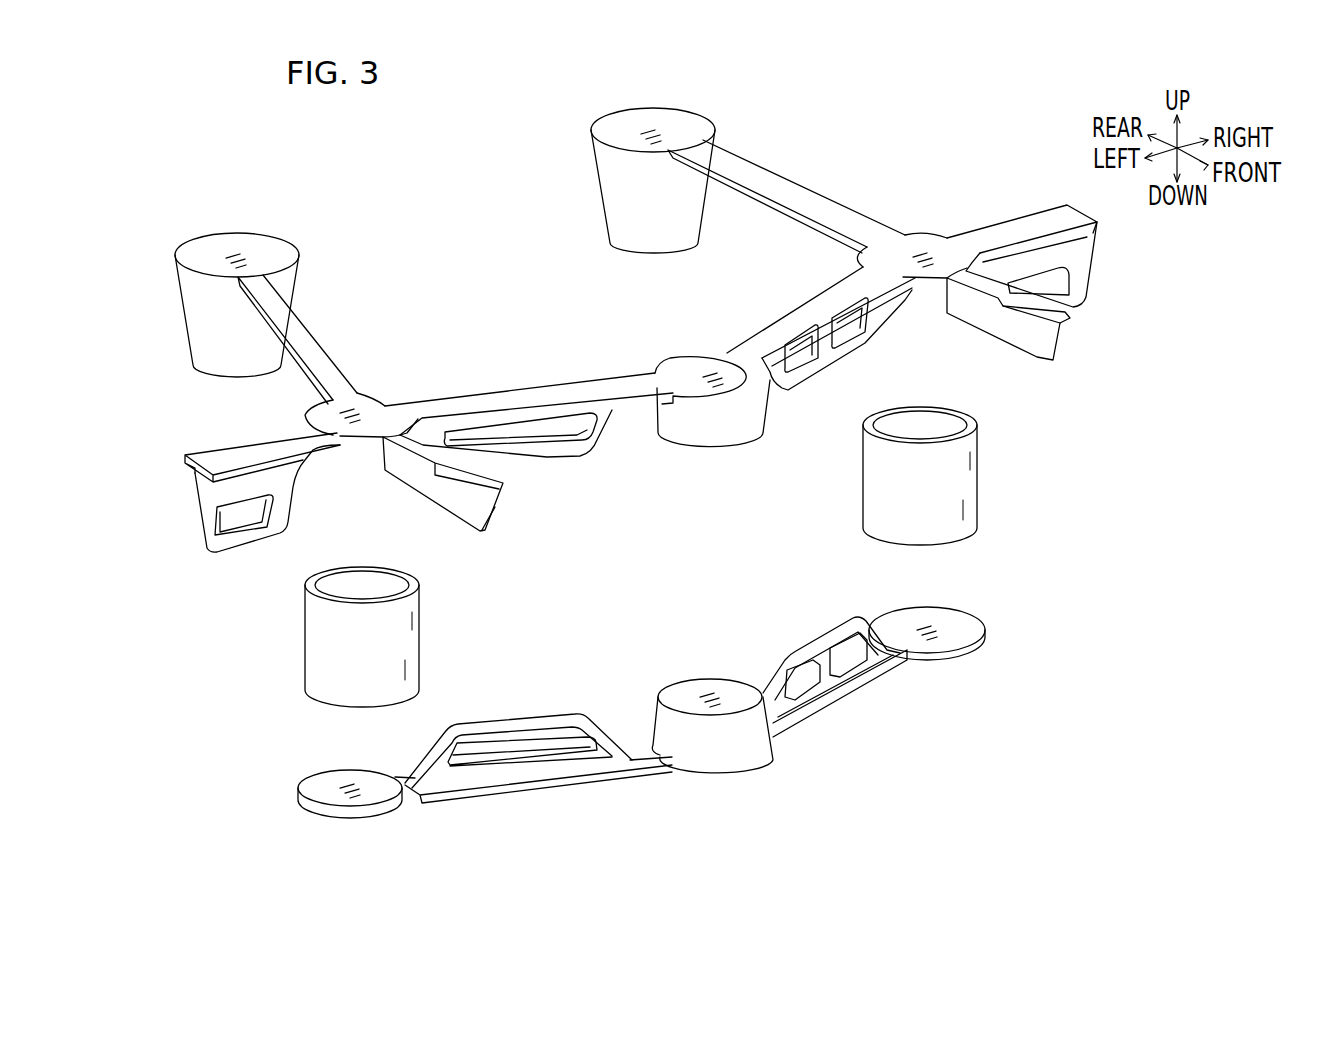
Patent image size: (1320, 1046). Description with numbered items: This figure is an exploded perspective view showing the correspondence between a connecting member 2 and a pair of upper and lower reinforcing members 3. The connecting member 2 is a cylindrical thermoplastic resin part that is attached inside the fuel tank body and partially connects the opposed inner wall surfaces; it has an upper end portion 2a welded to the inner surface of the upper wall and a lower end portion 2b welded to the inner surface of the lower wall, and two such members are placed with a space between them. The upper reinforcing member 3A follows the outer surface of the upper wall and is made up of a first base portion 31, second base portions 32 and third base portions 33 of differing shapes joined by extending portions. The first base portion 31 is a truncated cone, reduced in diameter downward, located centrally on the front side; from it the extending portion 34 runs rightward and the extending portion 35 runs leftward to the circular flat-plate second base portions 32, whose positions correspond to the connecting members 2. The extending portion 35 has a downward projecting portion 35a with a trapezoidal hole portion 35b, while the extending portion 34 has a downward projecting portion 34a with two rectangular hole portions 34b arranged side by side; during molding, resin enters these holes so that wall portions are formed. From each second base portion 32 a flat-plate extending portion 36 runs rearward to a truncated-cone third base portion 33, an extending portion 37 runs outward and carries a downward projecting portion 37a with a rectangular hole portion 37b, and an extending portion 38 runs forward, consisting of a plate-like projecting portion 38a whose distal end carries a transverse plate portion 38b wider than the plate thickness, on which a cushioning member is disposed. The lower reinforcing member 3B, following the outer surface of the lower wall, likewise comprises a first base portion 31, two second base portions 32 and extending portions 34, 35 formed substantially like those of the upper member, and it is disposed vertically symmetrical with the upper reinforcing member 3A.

The connecting member 2 is at (408, 637).
The upper end portion 2a is at (410, 575).
The lower end portion 2b is at (325, 707).
The reinforcing member 3 is at (659, 467).
The upper reinforcing member 3A is at (852, 182).
The lower reinforcing member 3B is at (858, 728).
The first base portion 31 is at (684, 365).
The second base portion 32 is at (378, 404).
The third base portion 33 is at (236, 246).
The extending portion 34 is at (800, 320).
The projecting portion 34a is at (878, 330).
The hole portion 34b is at (845, 372).
The extending portion 35 is at (525, 395).
The projecting portion 35a is at (605, 425).
The hole portion 35b is at (560, 432).
The extending portion 36 is at (318, 332).
The extending portion 37 is at (205, 450).
The projecting portion 37a is at (206, 547).
The hole portion 37b is at (243, 520).
The extending portion 38 is at (505, 512).
The projecting portion 38a is at (411, 475).
The transverse plate portion 38b is at (510, 482).